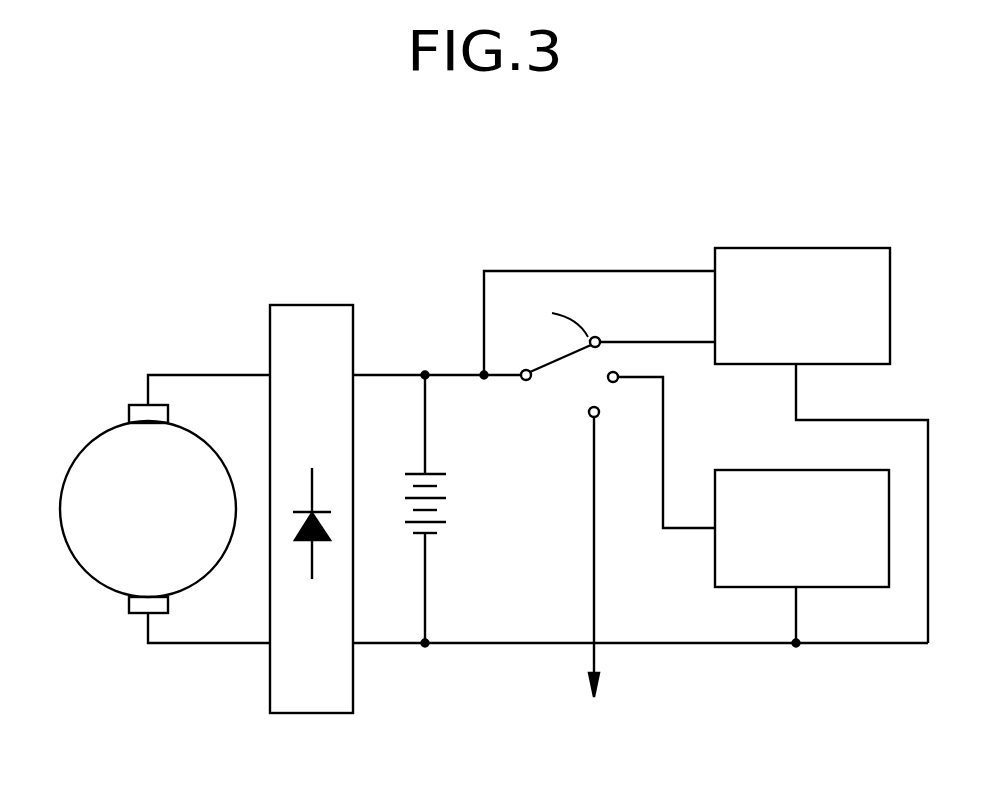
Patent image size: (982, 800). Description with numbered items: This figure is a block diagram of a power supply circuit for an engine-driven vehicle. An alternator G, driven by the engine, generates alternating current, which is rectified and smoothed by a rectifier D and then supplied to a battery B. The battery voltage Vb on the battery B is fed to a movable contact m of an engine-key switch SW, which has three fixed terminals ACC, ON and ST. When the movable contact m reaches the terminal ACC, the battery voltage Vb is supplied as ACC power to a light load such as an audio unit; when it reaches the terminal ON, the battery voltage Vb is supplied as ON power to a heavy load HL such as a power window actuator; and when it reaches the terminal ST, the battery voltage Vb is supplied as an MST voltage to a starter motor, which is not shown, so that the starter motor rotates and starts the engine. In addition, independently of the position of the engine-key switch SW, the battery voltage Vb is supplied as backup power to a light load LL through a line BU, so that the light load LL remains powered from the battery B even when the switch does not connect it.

The alternator G is at (103, 436).
The rectifier D is at (318, 305).
The battery voltage Vb is at (418, 363).
The battery B is at (436, 511).
The line BU is at (578, 271).
The movable contact m is at (552, 368).
The terminal ACC is at (652, 329).
The engine-key switch SW is at (537, 376).
The terminal ON is at (661, 439).
The terminal ST is at (607, 574).
The light load LL is at (823, 248).
The heavy load HL is at (715, 568).